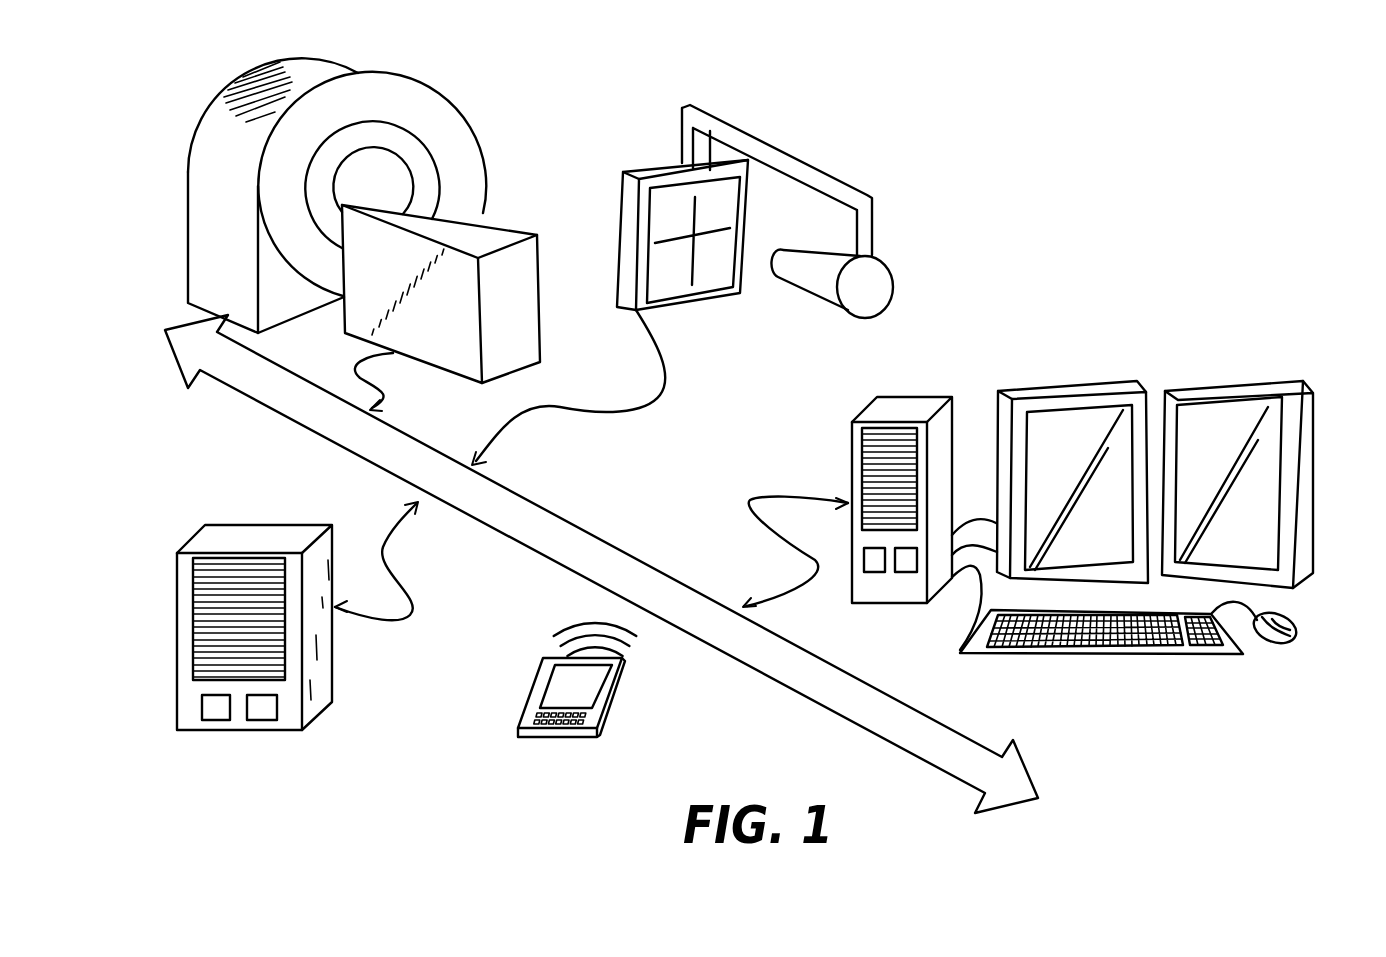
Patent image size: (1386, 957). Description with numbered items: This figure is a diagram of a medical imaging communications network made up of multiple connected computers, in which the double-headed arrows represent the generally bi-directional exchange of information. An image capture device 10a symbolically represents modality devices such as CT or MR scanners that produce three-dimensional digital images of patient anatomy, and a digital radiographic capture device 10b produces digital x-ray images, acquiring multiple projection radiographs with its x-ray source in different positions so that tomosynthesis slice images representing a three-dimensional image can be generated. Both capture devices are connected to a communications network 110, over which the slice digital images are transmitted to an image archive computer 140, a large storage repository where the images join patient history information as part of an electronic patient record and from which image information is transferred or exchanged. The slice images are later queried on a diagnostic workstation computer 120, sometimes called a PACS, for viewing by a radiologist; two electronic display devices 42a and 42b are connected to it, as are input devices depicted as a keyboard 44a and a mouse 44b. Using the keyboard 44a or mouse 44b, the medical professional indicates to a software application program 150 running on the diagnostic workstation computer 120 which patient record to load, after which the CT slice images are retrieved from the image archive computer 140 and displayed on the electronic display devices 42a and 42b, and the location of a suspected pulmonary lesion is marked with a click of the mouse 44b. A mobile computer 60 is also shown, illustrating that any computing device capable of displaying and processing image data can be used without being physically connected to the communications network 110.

The image capture device 10a is at (457, 112).
The digital radiographic (DR) capture device 10b is at (756, 135).
The communications network 110 is at (832, 702).
The diagnostic workstation computer 120 is at (852, 422).
The software application program 150 is at (903, 407).
The electronic display device 42a is at (1068, 380).
The electronic display device 42b is at (1257, 383).
The keyboard 44a is at (1160, 655).
The mouse 44b is at (1295, 625).
The image archive computer 140 is at (177, 680).
The mobile computer 60 is at (518, 723).